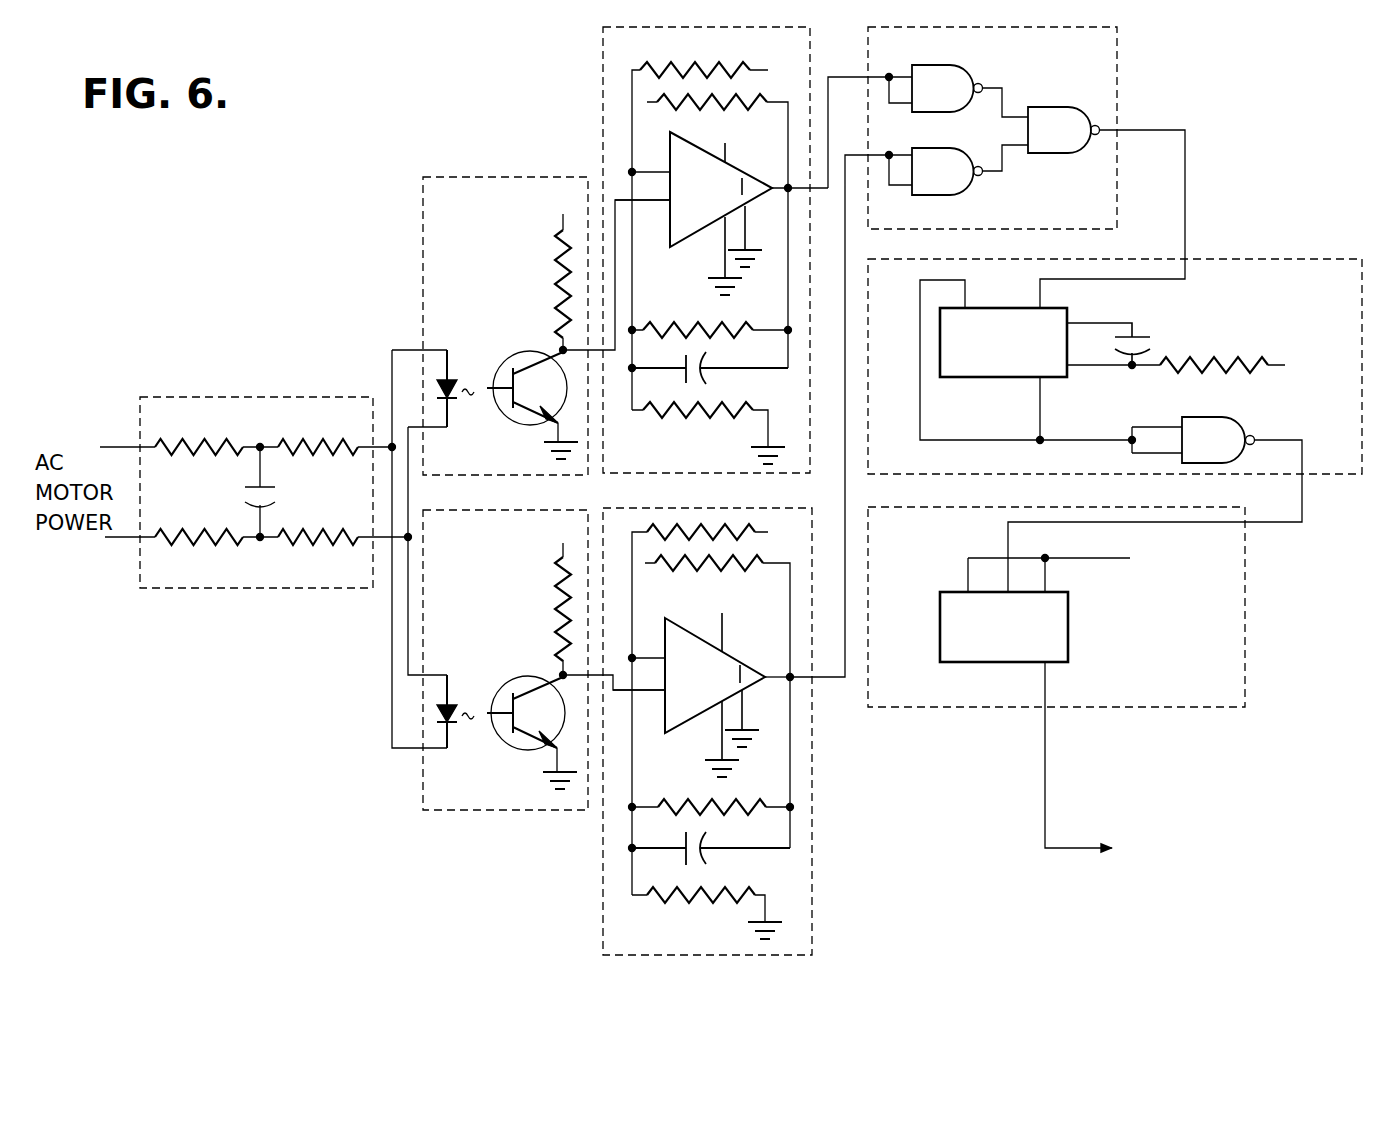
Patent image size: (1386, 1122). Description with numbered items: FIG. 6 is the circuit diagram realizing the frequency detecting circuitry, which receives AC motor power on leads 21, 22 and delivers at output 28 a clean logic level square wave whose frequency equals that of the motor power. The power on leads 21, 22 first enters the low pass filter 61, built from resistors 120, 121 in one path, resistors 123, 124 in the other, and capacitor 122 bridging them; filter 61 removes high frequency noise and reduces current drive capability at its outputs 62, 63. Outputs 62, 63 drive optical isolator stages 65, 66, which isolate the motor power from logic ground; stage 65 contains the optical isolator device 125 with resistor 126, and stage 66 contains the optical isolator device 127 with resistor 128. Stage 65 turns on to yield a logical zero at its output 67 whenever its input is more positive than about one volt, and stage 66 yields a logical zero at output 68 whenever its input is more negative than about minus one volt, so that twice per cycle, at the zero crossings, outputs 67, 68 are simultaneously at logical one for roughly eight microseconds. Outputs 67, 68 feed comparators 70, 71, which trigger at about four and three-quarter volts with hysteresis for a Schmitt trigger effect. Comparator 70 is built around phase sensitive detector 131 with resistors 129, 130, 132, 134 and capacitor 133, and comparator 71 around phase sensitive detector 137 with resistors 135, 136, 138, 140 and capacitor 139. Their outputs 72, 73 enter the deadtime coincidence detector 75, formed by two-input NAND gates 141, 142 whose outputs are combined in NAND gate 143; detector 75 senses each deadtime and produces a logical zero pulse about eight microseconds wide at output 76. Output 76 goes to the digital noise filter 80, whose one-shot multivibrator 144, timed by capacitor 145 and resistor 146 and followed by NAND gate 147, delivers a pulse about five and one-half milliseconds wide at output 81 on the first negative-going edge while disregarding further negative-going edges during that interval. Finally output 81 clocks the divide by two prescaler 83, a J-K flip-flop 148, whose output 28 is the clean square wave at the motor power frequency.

The lead 21 is at (122, 447).
The lead 22 is at (122, 537).
The output 28 is at (1045, 812).
The low pass filter 61 is at (264, 396).
The output of low pass filter 62 is at (384, 410).
The output of low pass filter 63 is at (386, 588).
The optical isolator 65 is at (463, 177).
The optical isolator 66 is at (423, 786).
The output of optical isolator 67 is at (650, 200).
The output of optical isolator 68 is at (648, 692).
The comparator 70 is at (603, 45).
The comparator 71 is at (812, 772).
The comparator output 72 is at (848, 77).
The comparator output 73 is at (850, 155).
The deadtime coincidence detector 75 is at (1117, 56).
The output of deadtime coincidence detector 76 is at (1185, 150).
The digital noise filter 80 is at (1220, 259).
The output of digital noise filter 81 is at (1302, 496).
The divide by two prescaler 83 is at (1245, 660).
The resistor 120 is at (230, 442).
The resistor 121 is at (330, 442).
The capacitor 122 is at (276, 500).
The resistor 123 is at (208, 536).
The resistor 124 is at (330, 540).
The optical isolator 125 is at (468, 376).
The resistor 126 is at (555, 260).
The optical isolator 127 is at (488, 674).
The resistor 128 is at (556, 622).
The resistor 129 is at (682, 68).
The resistor 130 is at (758, 98).
The phase sensitive detector 131 is at (694, 240).
The resistor 132 is at (670, 324).
The capacitor 133 is at (700, 368).
The resistor 134 is at (692, 410).
The resistor 135 is at (679, 530).
The resistor 136 is at (738, 576).
The phase sensitive detector 137 is at (688, 728).
The resistor 138 is at (698, 800).
The capacitor 139 is at (706, 846).
The resistor 140 is at (718, 902).
The two input NAND gate 141 is at (970, 91).
The two input NAND gate 142 is at (970, 170).
The two input NAND gate 143 is at (1064, 130).
The multivibrator 144 is at (993, 360).
The capacitor 145 is at (1146, 344).
The resistor 146 is at (1220, 356).
The two input NAND gate 147 is at (1146, 440).
The J-K flip-flop 148 is at (1052, 604).